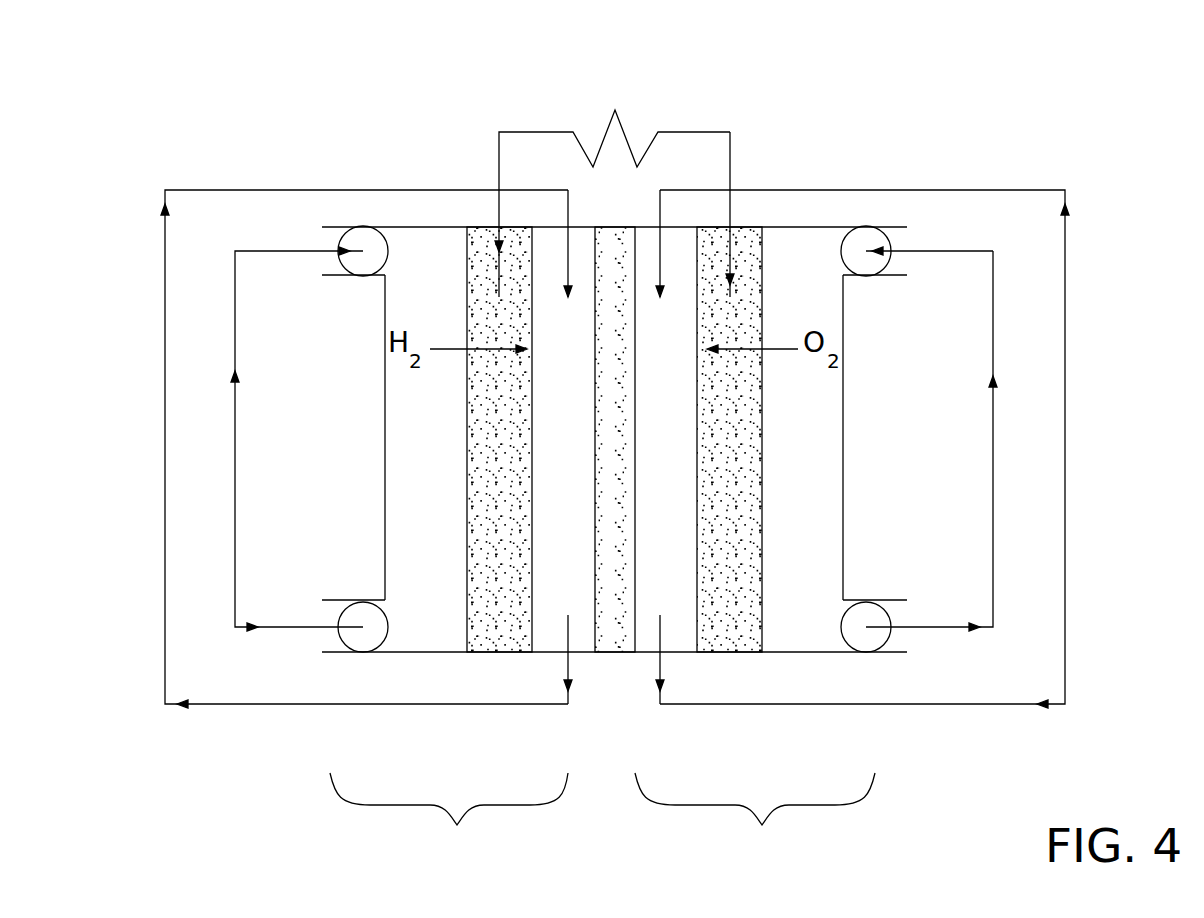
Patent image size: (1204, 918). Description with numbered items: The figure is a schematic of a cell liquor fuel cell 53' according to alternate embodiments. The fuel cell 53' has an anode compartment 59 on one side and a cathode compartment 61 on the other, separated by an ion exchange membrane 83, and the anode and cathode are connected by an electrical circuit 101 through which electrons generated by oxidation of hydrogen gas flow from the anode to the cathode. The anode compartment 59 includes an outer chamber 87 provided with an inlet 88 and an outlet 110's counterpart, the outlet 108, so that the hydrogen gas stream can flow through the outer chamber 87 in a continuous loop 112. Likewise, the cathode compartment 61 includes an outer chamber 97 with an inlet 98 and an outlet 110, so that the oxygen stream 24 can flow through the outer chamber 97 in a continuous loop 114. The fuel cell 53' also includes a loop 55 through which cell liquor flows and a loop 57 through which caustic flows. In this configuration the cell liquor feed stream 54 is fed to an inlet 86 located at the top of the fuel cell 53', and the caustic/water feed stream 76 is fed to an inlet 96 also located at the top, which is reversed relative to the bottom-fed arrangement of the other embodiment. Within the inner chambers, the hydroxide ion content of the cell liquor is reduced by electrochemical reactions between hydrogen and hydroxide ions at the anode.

The electrical circuit 101 is at (551, 131).
The fuel cell 53' is at (621, 129).
The loop 55 is at (232, 187).
The loop 57 is at (990, 187).
The anode compartment 59 is at (363, 168).
The cell liquor feed stream 54 is at (463, 189).
The inlet 86 is at (569, 292).
The caustic/water feed stream 76 is at (745, 189).
The inlet 96 is at (661, 292).
The oxygen stream 24 is at (932, 251).
The inlet 88 is at (343, 258).
The inlet 98 is at (887, 263).
The outer chamber 97 is at (830, 318).
The continuous loop 114 is at (990, 405).
The outer chamber 87 is at (398, 389).
The continuous loop 112 is at (237, 461).
The outlet 108 is at (342, 615).
The outlet 110 is at (887, 620).
The cathode compartment 61 is at (945, 485).
The ion exchange membrane 83 is at (615, 655).